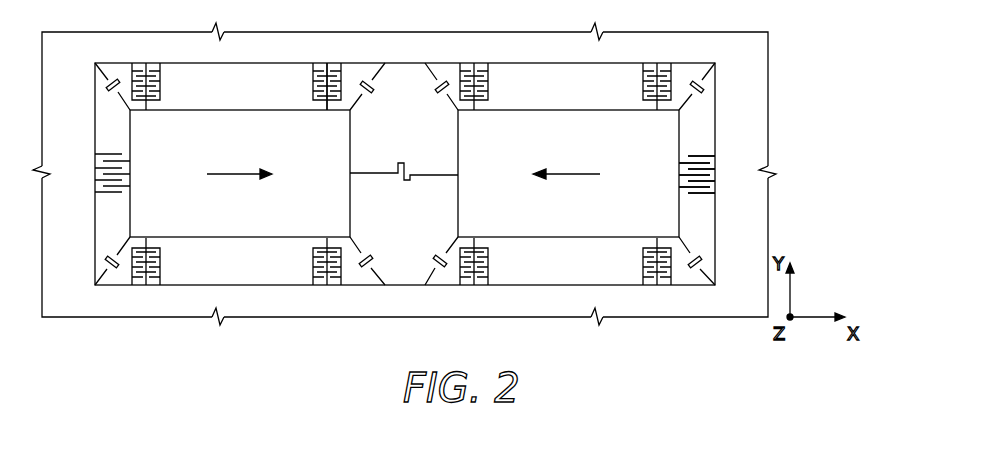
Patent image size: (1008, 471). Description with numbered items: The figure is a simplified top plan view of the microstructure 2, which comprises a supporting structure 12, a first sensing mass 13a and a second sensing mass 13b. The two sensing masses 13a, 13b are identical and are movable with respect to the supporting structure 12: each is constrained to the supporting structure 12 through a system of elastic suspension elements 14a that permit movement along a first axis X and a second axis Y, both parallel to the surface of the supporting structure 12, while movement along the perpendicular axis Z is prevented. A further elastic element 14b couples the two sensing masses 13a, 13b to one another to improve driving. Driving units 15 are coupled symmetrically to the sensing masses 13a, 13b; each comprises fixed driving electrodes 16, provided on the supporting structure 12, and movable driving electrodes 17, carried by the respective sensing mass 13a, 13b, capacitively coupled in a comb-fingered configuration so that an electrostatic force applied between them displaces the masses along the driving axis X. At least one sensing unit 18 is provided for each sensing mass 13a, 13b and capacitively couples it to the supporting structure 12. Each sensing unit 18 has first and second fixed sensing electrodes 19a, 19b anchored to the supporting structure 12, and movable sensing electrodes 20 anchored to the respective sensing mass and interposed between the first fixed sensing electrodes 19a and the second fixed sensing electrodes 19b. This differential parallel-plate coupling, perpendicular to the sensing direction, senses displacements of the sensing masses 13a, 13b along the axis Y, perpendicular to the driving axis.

The microstructure 2 is at (648, 16).
The supporting structure 12 is at (753, 50).
The first sensing mass 13a is at (182, 225).
The second sensing mass 13b is at (663, 227).
The elastic suspension elements 14a is at (118, 78).
The further elastic element 14b is at (403, 182).
The driving units 15 is at (291, 90).
The fixed driving electrodes 16 is at (311, 72).
The movable driving electrodes 17 is at (325, 67).
The sensing unit 18 is at (106, 138).
The first fixed sensing electrodes 19a is at (710, 155).
The second fixed sensing electrodes 19b is at (716, 163).
The movable sensing electrodes 20 is at (682, 187).